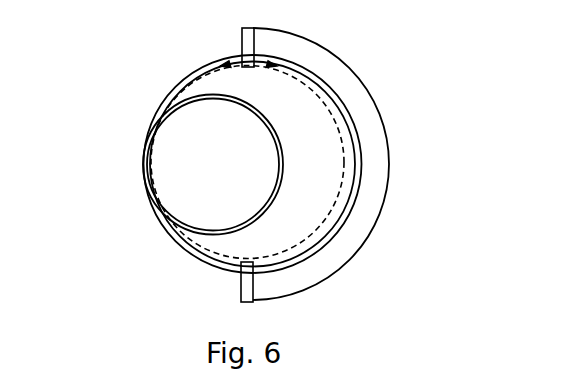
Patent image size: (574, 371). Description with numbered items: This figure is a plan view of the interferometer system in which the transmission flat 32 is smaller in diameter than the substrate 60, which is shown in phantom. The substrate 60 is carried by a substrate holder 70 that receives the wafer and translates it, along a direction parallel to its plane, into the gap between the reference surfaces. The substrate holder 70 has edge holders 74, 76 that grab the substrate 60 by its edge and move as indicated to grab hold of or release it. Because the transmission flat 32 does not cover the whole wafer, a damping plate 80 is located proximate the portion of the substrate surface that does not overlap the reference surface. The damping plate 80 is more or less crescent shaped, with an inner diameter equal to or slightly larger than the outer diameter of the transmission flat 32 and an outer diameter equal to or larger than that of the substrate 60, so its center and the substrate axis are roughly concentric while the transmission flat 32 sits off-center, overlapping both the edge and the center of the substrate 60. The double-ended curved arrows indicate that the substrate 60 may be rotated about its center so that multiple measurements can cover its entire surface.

The transmission flat 32 is at (185, 157).
The substrate 60 is at (344, 168).
The substrate holder 70 is at (375, 99).
The edge holder 74 is at (243, 48).
The edge holder 76 is at (247, 281).
The damping plate 80 is at (173, 84).